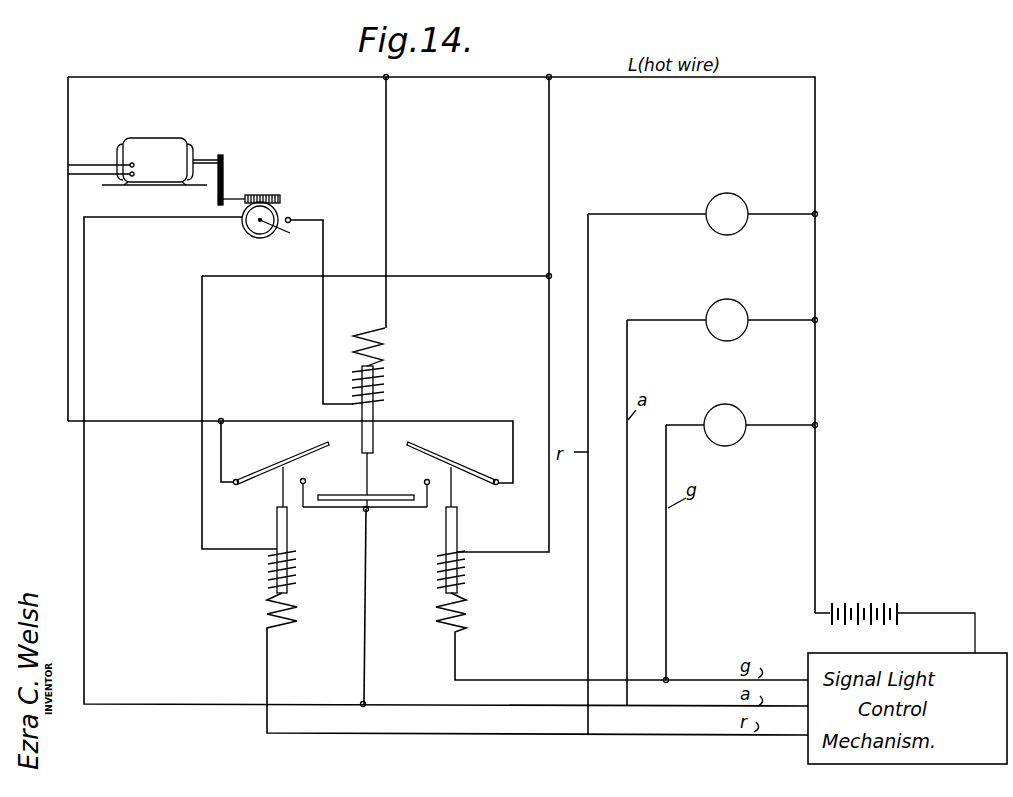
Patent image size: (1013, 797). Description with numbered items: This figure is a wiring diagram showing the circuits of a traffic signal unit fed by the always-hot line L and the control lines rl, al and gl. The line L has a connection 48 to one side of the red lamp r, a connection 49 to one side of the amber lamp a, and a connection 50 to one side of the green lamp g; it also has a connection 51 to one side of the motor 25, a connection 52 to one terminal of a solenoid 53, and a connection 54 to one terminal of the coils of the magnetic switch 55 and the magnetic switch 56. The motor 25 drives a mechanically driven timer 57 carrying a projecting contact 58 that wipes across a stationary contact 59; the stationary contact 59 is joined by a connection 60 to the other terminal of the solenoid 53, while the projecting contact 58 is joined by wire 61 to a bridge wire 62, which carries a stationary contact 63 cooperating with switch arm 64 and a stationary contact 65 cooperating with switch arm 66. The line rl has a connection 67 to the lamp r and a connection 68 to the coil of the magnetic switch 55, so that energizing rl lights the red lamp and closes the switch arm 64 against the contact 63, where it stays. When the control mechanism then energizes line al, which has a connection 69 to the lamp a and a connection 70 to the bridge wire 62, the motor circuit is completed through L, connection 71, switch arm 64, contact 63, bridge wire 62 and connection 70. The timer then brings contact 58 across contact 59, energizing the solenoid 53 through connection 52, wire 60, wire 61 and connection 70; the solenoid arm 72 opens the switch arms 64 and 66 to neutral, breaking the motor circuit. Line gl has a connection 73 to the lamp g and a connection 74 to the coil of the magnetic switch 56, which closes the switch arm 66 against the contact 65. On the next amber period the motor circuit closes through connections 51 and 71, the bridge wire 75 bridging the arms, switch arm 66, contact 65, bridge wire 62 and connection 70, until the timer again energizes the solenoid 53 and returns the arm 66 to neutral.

The motor 25 is at (148, 146).
The connection to lamp r 48 is at (776, 214).
The connection to lamp a 49 is at (770, 320).
The connection to lamp g 50 is at (771, 425).
The connection to motor 51 is at (68, 126).
The connection to solenoid 52 is at (386, 232).
The solenoid 53 is at (376, 392).
The connection to magnetic switch coils 54 is at (549, 188).
The magnetic switch 55 is at (270, 574).
The magnetic switch 56 is at (457, 575).
The mechanically driven timer 57 is at (268, 213).
The projecting contact 58 is at (260, 228).
The stationary contact 59 is at (292, 219).
The connection to solenoid 60 is at (323, 256).
The wire 61 is at (192, 217).
The bridge wire 62 is at (348, 512).
The stationary contact 63 is at (305, 486).
The switch arm 64 is at (287, 462).
The stationary contact 65 is at (424, 487).
The switch arm 66 is at (462, 468).
The connection to lamp r 67 is at (656, 208).
The connection to magnetic switch coil 68 is at (462, 735).
The connection to lamp a 69 is at (661, 320).
The connection to bridge wire 70 is at (466, 706).
The connection 71 is at (68, 316).
The solenoid arm 72 is at (381, 495).
The connection to lamp g 73 is at (685, 425).
The connection to magnetic switch coil 74 is at (533, 680).
The bridge wire 75 is at (281, 408).